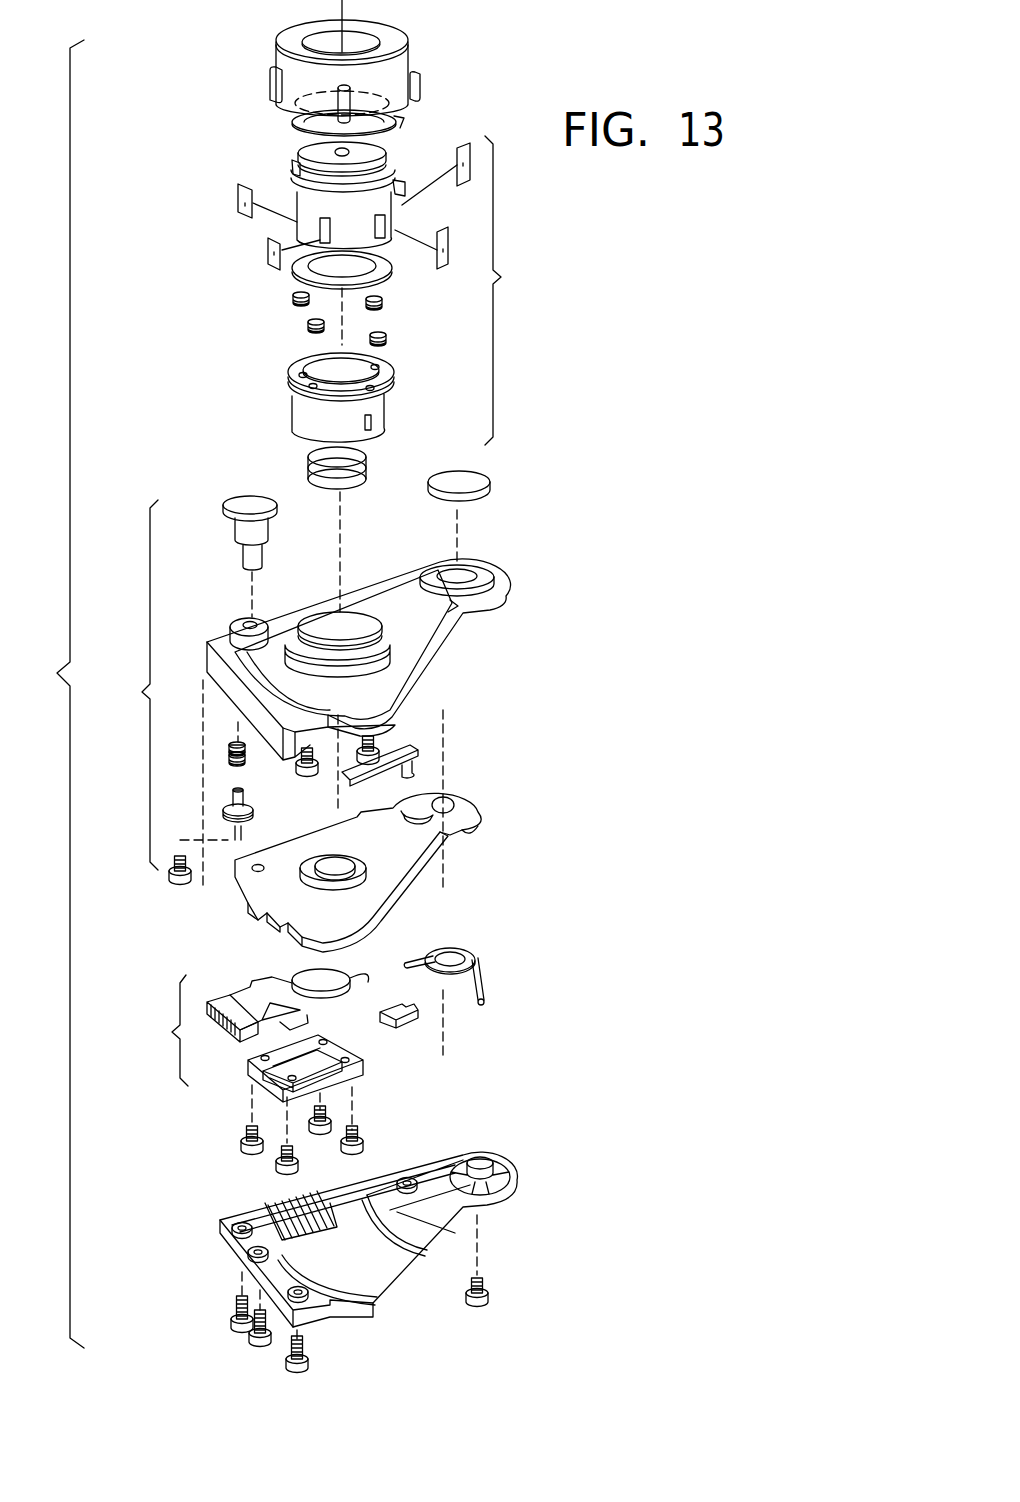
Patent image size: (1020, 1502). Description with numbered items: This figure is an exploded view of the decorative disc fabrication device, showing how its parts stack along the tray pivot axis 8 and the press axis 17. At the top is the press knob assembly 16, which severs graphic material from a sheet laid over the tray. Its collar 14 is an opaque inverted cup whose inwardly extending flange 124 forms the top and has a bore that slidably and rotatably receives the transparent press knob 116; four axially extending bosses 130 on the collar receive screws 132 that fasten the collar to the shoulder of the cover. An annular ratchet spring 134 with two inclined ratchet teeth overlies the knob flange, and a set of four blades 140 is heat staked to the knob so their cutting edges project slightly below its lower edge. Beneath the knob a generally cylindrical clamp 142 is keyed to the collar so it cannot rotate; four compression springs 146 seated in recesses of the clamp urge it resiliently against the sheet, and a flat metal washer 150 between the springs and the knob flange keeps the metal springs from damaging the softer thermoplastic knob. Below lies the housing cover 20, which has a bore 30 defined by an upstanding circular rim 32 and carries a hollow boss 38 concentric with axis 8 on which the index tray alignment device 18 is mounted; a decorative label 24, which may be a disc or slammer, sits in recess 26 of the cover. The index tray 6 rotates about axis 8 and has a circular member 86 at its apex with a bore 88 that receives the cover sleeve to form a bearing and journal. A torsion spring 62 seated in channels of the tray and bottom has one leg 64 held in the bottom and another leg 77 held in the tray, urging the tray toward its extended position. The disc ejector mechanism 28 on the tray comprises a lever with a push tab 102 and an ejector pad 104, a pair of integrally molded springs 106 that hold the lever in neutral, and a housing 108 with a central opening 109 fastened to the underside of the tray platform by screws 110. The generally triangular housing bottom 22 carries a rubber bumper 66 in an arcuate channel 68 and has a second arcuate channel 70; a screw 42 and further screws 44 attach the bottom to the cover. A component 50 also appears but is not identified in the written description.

The collar 14 is at (410, 58).
The flange 124 is at (277, 22).
The bosses 130 is at (270, 77).
The ratchet spring 134 is at (293, 124).
The press knob 116 is at (297, 157).
The blades 140 is at (270, 250).
The washer 150 is at (398, 282).
The compression springs 146 is at (310, 323).
The clamp 142 is at (292, 412).
The axis 17 is at (338, 505).
The press knob assembly 16 is at (509, 290).
The decorative label 24 is at (482, 483).
The axis 8 is at (457, 533).
The recess 26 is at (467, 577).
The boss 38 is at (265, 618).
The cover 20 is at (503, 598).
The bore 30 is at (350, 622).
The rim 32 is at (383, 633).
The index tray alignment device 18 is at (134, 685).
The retainer bar 50 is at (330, 772).
The screws 132 is at (310, 775).
The index tray 6 is at (472, 830).
The bore 88 is at (450, 800).
The circular member 86 is at (482, 812).
The torsion spring 62 is at (478, 953).
The leg 64 is at (405, 962).
The leg 77 is at (485, 1002).
The rubber bumper 66 is at (413, 1020).
The disc ejector mechanism 28 is at (160, 1030).
The springs 106 is at (270, 978).
The ejector pad 104 is at (335, 972).
The push tab 102 is at (250, 1035).
The housing 108 is at (253, 1088).
The central opening 109 is at (353, 1078).
The screws 110 is at (277, 1170).
The bottom 22 is at (515, 1168).
The arcuate channel 68 is at (410, 1237).
The second arcuate channel 70 is at (370, 1273).
The screw 42 is at (487, 1297).
The screws 44 is at (290, 1362).